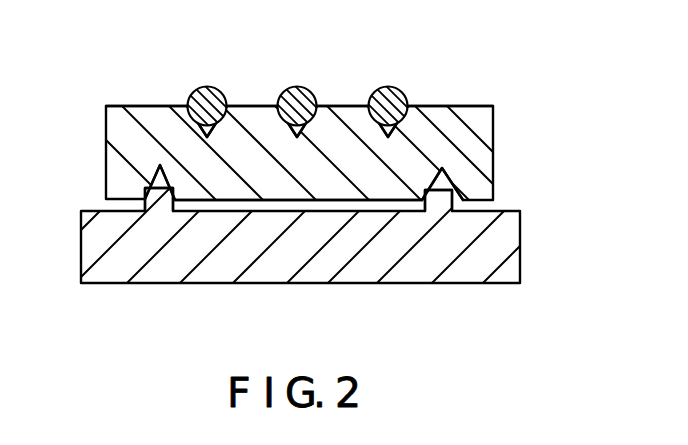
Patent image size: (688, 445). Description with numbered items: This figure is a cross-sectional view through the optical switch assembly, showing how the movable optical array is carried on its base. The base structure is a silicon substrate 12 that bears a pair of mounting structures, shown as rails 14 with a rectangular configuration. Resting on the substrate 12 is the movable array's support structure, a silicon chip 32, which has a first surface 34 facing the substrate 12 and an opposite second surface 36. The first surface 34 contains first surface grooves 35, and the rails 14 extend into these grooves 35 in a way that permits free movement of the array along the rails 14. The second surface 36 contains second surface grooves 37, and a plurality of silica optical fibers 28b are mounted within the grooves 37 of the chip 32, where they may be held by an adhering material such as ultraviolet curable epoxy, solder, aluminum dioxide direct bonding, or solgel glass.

The substrate 12 is at (498, 258).
The rails 14 is at (148, 189).
The optical fibers 28b is at (375, 90).
The chip 32 is at (473, 135).
The first surface 34 is at (291, 206).
The first surface grooves 35 is at (175, 202).
The second surface 36 is at (481, 105).
The second surface grooves 37 is at (186, 118).